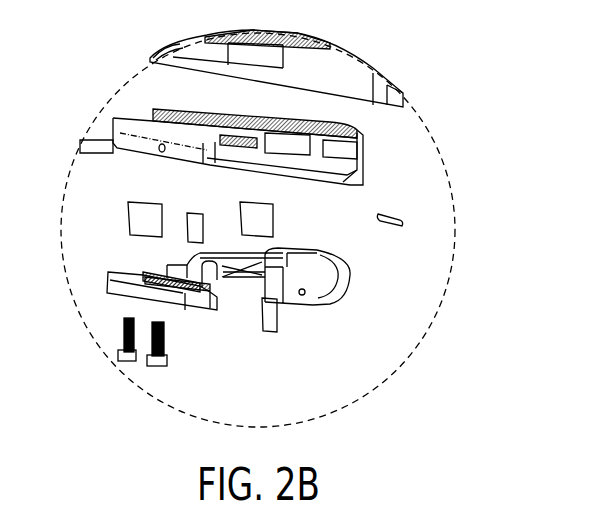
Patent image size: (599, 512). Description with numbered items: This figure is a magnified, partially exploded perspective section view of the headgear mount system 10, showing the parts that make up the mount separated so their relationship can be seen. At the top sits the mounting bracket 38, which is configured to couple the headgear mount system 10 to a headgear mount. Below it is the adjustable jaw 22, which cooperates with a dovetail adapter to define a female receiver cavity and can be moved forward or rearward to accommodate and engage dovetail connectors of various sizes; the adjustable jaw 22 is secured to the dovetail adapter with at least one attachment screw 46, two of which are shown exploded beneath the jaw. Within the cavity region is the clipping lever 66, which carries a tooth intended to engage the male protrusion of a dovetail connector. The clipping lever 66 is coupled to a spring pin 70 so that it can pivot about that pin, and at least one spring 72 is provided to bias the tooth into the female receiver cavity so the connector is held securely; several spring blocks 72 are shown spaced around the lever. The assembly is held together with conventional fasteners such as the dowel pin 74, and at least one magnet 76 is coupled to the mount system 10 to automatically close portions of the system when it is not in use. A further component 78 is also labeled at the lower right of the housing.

The headgear mount system 10 is at (428, 112).
The adjustable jaw 22 is at (196, 305).
The mounting bracket 38 is at (160, 108).
The attachment screw 46 is at (128, 362).
The clipping lever 66 is at (227, 262).
The spring pin 70 is at (88, 155).
The spring 72 is at (188, 237).
The dowel pin 74 is at (390, 213).
The magnet 76 is at (137, 220).
The housing rail 78 is at (345, 190).